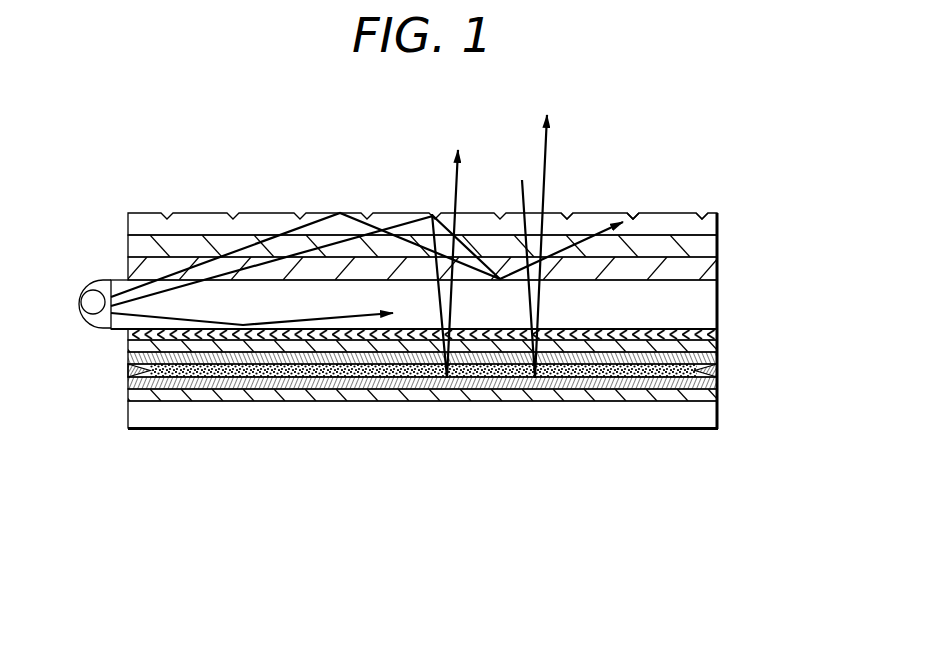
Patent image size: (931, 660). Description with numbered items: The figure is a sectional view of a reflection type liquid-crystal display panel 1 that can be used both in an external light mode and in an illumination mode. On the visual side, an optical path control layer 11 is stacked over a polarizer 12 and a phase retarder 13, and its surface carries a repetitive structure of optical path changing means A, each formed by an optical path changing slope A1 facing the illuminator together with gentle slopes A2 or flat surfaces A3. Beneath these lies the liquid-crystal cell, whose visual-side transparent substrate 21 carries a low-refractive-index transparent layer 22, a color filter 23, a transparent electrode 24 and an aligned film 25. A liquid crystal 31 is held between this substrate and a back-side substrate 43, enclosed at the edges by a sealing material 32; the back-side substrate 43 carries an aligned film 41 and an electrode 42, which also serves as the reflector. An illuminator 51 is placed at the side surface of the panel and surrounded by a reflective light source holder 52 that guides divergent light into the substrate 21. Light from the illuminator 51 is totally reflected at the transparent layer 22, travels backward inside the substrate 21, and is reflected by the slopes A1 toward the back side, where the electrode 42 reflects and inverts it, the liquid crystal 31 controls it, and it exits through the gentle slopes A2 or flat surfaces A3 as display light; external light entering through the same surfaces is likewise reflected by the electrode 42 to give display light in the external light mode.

The liquid-crystal display panel 1 is at (833, 195).
The optical path control layer 11 is at (720, 222).
The polarizer 12 is at (720, 243).
The phase retarder 13 is at (720, 266).
The transparent substrate 21 is at (720, 288).
The low-refractive-index transparent layer 22 is at (720, 337).
The color filter 23 is at (720, 348).
The transparent electrode 24 is at (720, 360).
The aligned film 25 is at (720, 368).
The liquid crystal 31 is at (720, 376).
The sealing material 32 is at (720, 384).
The aligned film 41 is at (720, 394).
The electrode 42 is at (720, 404).
The back-side substrate 43 is at (720, 421).
The illuminator 51 is at (90, 300).
The light source holder 52 is at (95, 327).
The optical path changing means A is at (567, 214).
The optical path changing slope A1 is at (632, 216).
The gentle slope A2 is at (636, 216).
The flat surface A3 is at (673, 213).